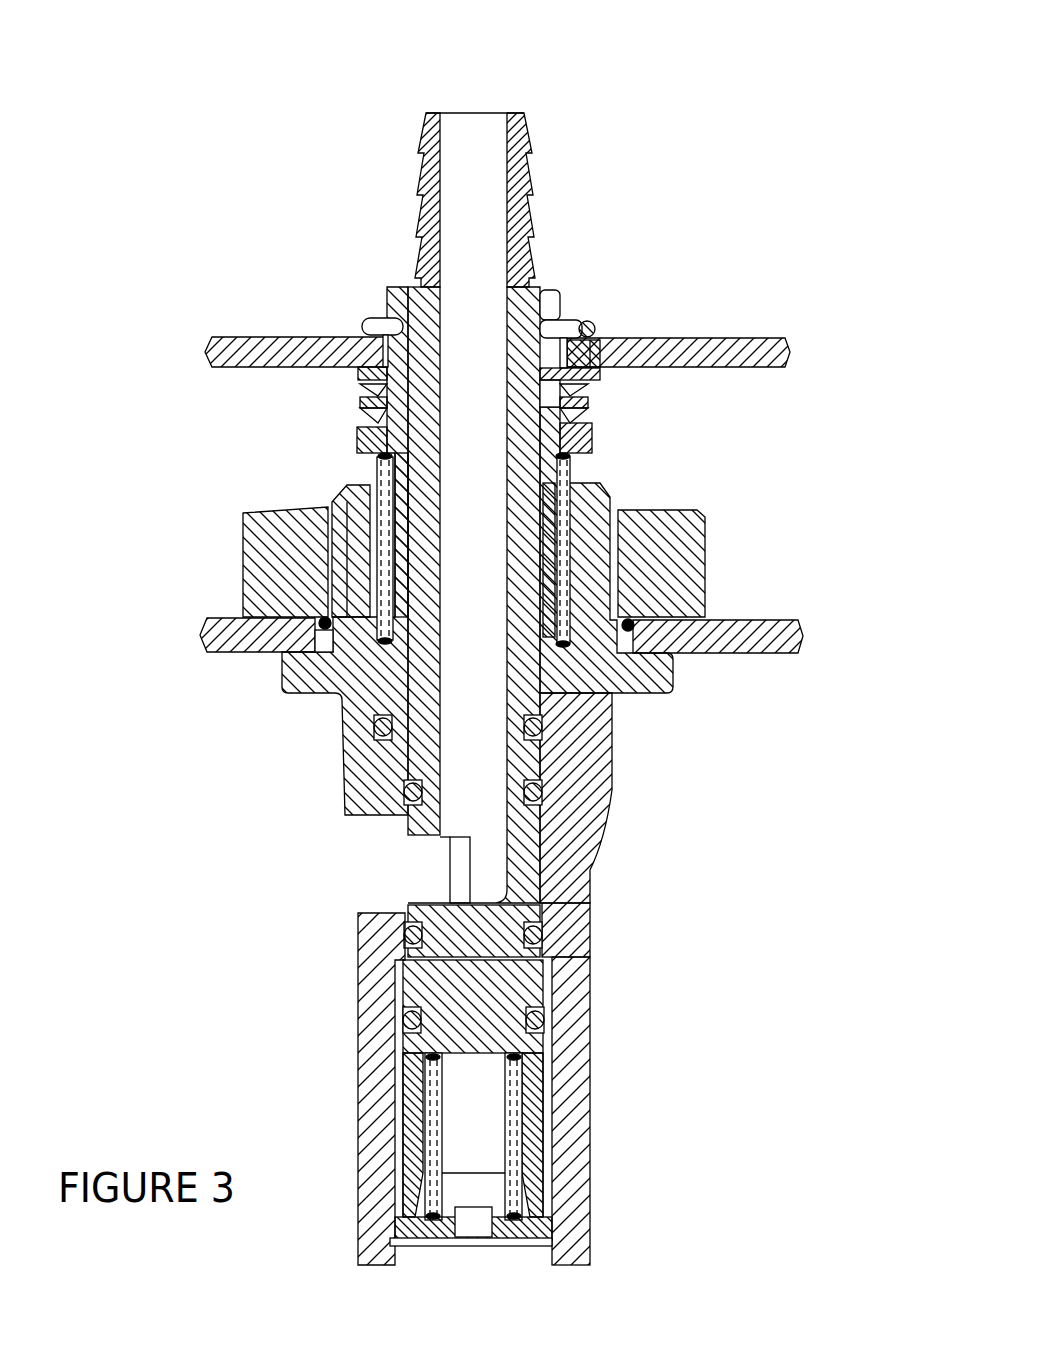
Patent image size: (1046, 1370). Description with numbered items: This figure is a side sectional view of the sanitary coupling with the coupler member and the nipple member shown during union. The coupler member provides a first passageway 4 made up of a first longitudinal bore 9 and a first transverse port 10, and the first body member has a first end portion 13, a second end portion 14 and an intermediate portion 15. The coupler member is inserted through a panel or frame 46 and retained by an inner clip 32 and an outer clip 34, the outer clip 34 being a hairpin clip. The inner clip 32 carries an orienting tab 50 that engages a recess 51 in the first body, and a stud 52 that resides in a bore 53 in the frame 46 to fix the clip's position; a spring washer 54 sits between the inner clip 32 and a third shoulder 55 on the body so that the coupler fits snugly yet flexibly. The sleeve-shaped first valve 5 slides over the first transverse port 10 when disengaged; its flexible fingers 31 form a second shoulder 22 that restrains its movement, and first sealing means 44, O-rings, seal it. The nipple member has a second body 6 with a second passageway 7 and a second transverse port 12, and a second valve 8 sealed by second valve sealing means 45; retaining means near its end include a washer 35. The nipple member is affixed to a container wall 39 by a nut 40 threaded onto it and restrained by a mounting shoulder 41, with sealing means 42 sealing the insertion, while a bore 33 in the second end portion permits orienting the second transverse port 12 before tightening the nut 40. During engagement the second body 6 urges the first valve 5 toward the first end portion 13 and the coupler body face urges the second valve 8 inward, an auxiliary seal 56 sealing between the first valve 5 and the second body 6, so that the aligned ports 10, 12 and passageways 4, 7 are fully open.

The first passageway 4 is at (453, 178).
The first valve 5 is at (586, 682).
The second body 6 is at (590, 1110).
The second passageway 7 is at (450, 890).
The second valve 8 is at (495, 995).
The first longitudinal bore 9 is at (562, 700).
The first transverse port 10 is at (470, 868).
The second transverse port 12 is at (450, 897).
The first end portion 13 is at (437, 112).
The second end portion 14 is at (548, 958).
The intermediate portion 15 is at (553, 813).
The second shoulder 22 is at (400, 515).
The flexible fingers 31 is at (382, 520).
The inner clip 32 is at (600, 378).
The bore 33 is at (608, 485).
The outer clip 34 is at (560, 327).
The washer 35 is at (560, 1240).
The container wall 39 is at (790, 628).
The nut 40 is at (707, 556).
The mounting shoulder 41 is at (630, 632).
The sealing means 42 is at (405, 525).
The first sealing means 44 is at (413, 792).
The second valve sealing means 45 is at (500, 1055).
The panel or frame 46 is at (705, 338).
The orienting tab 50 is at (520, 322).
The recess 51 is at (547, 385).
The stud 52 is at (588, 322).
The bore 53 is at (608, 347).
The spring washer 54 is at (377, 413).
The third shoulder 55 is at (592, 424).
The auxiliary seal 56 is at (383, 727).